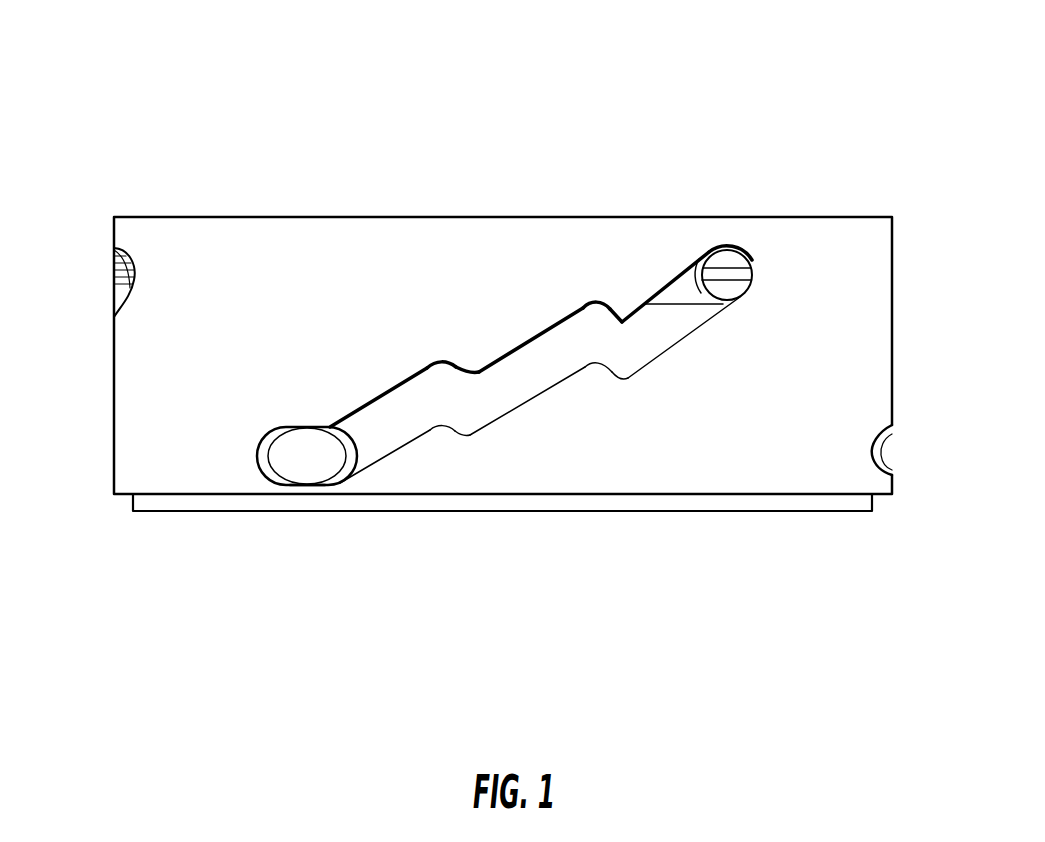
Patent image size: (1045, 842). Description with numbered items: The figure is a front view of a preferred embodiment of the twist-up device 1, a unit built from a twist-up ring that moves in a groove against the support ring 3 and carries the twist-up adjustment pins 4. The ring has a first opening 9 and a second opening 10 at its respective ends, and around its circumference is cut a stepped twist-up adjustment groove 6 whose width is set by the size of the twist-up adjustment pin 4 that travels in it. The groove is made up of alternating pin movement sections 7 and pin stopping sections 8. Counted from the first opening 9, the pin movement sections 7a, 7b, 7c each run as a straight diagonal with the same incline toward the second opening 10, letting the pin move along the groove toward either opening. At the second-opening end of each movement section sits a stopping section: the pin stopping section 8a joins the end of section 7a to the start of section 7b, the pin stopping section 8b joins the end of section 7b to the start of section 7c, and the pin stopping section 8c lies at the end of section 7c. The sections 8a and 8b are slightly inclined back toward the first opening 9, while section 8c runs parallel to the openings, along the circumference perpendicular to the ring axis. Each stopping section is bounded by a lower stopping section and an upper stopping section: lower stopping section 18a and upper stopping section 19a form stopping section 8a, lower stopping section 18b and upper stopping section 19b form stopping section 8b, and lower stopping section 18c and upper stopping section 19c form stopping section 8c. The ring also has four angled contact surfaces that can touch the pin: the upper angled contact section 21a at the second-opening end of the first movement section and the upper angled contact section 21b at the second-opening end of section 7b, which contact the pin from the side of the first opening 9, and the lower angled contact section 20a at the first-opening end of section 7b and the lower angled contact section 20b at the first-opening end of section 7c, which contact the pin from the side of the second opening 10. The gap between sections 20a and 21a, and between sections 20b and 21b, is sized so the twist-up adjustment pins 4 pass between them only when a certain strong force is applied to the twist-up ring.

The twist-up device 1 is at (738, 90).
The support ring 3 is at (682, 285).
The twist-up adjustment pin 4 is at (115, 255).
The twist-up adjustment groove 6 is at (122, 283).
The pin movement section 7 is at (338, 628).
The pin movement section 7a is at (654, 336).
The pin movement section 7b is at (522, 392).
The pin movement section 7c is at (388, 432).
The pin stopping section 8 is at (250, 98).
The pin stopping section 8a is at (600, 345).
The pin stopping section 8b is at (448, 408).
The pin stopping section 8c is at (287, 443).
The first opening 9 is at (170, 208).
The second opening 10 is at (178, 520).
The lower stopping section 18a is at (628, 378).
The lower stopping section 18b is at (471, 435).
The lower stopping section 18c is at (300, 486).
The upper stopping section 19a is at (592, 305).
The upper stopping section 19b is at (438, 364).
The upper stopping section 19c is at (300, 427).
The lower angled contact section 20a is at (587, 365).
The lower angled contact section 20b is at (437, 430).
The upper angled contact section 21a is at (622, 322).
The upper angled contact section 21b is at (479, 372).